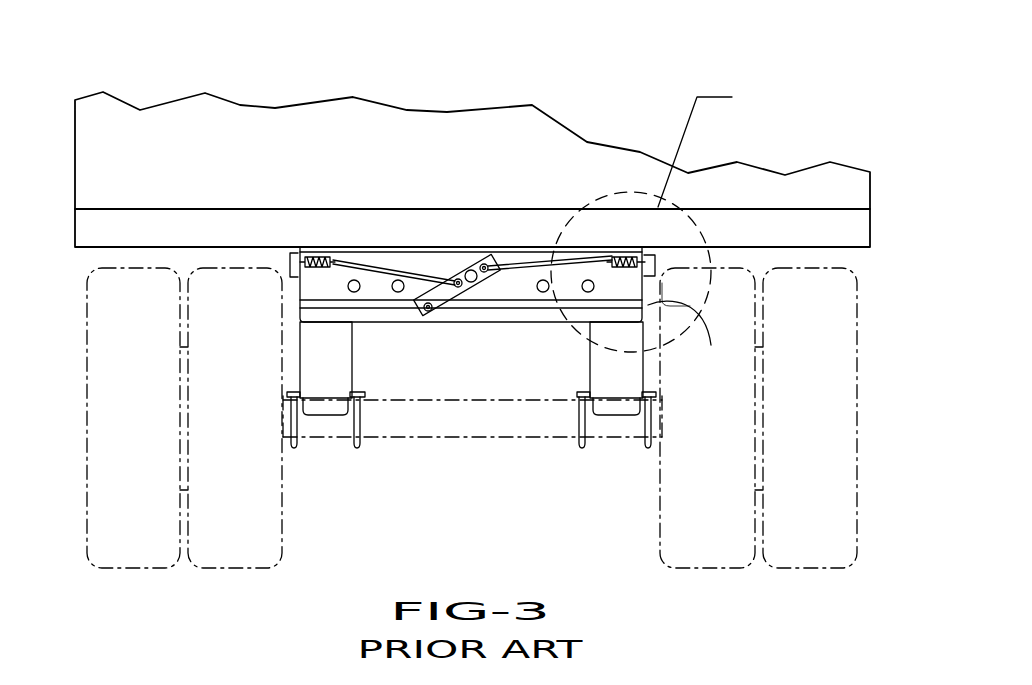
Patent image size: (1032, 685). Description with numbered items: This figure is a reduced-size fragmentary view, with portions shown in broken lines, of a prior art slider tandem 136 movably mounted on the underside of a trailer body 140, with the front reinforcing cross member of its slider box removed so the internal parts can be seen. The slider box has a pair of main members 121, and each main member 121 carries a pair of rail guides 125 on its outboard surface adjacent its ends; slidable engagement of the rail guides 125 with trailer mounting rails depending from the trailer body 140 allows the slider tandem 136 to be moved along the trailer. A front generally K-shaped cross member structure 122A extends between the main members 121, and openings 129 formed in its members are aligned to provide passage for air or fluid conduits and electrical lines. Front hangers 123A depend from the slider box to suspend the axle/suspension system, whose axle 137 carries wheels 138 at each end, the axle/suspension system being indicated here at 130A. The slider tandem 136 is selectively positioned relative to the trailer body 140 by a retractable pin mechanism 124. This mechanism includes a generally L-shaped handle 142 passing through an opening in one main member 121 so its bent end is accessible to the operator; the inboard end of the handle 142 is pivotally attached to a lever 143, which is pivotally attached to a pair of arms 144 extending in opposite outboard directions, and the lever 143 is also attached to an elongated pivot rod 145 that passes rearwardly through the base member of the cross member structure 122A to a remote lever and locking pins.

The trailer body 140 is at (274, 100).
The slider tandem 136 is at (863, 121).
The rail guide 125 is at (300, 268).
The opening 129 is at (351, 281).
The arm 144 is at (403, 262).
The pivot rod 145 is at (469, 272).
The retractable pin mechanism 124 is at (498, 251).
The main member 121 is at (632, 292).
The handle 142 is at (707, 313).
The wheel 138 is at (158, 425).
The front K-shaped cross member structure 122A is at (389, 320).
The lever 143 is at (443, 300).
The front hanger 123A is at (322, 389).
The axle 130A is at (445, 451).
The axle 137 is at (525, 440).